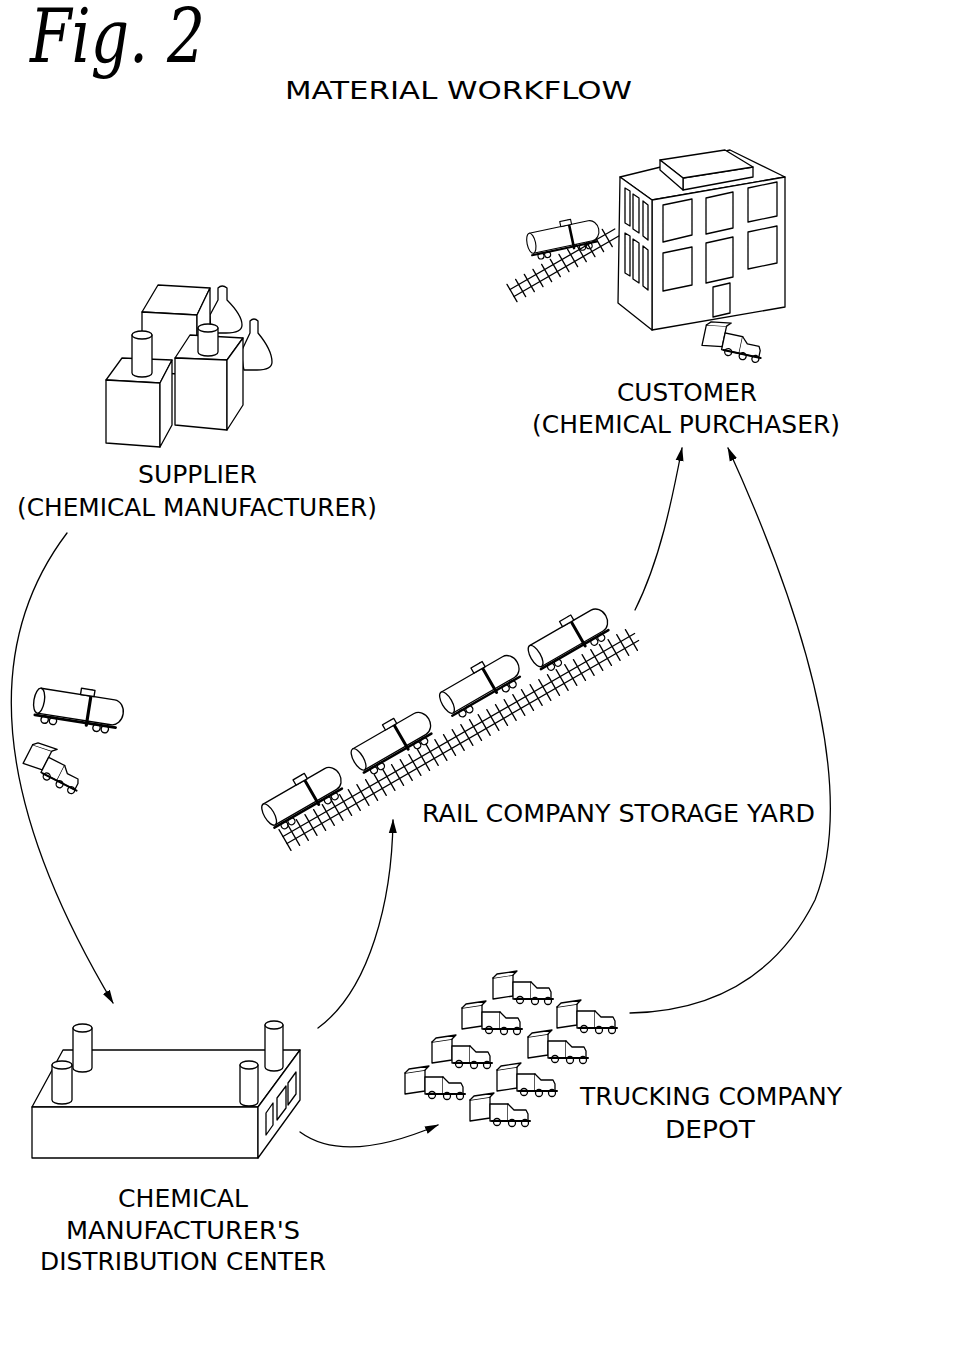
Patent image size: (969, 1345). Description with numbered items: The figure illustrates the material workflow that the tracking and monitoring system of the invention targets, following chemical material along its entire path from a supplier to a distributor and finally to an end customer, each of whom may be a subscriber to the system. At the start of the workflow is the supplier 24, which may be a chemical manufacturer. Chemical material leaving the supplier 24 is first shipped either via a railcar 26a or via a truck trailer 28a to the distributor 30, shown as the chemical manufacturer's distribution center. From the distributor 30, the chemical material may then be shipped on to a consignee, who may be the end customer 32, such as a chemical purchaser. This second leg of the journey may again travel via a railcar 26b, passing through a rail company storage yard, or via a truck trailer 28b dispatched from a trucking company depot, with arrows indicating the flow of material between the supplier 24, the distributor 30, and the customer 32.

The supplier 24 is at (168, 282).
The railcar 26a is at (88, 687).
The truck trailer 28a is at (100, 787).
The railcar 26b is at (463, 680).
The truck trailer 28b is at (602, 1003).
The distributor 30 is at (193, 1050).
The end customer 32 is at (746, 152).